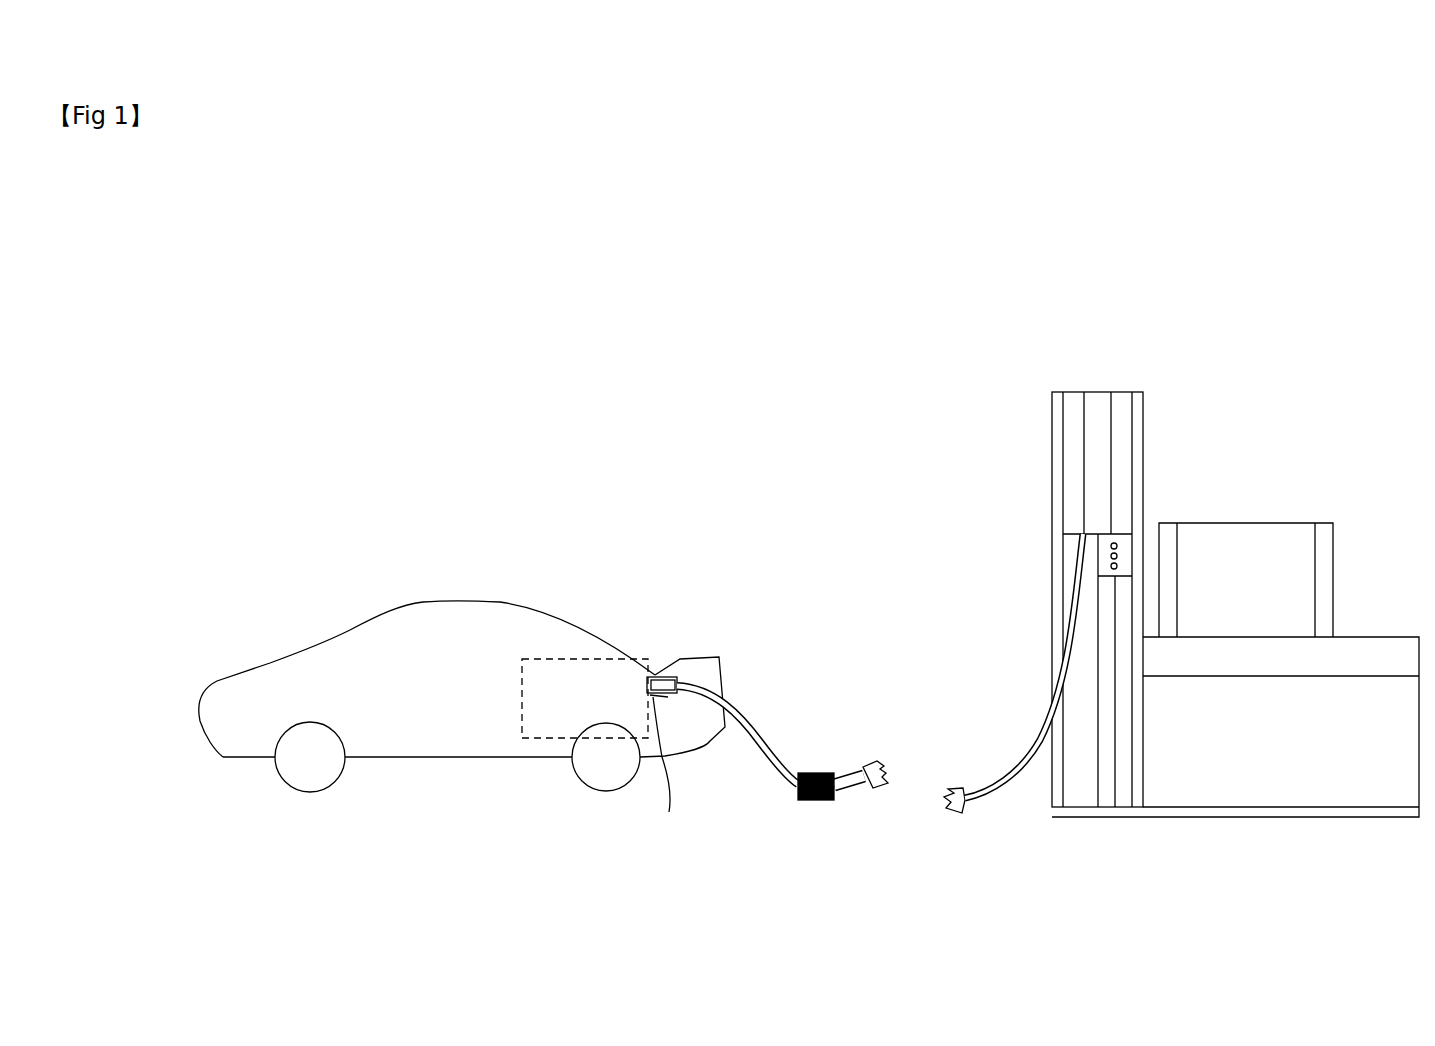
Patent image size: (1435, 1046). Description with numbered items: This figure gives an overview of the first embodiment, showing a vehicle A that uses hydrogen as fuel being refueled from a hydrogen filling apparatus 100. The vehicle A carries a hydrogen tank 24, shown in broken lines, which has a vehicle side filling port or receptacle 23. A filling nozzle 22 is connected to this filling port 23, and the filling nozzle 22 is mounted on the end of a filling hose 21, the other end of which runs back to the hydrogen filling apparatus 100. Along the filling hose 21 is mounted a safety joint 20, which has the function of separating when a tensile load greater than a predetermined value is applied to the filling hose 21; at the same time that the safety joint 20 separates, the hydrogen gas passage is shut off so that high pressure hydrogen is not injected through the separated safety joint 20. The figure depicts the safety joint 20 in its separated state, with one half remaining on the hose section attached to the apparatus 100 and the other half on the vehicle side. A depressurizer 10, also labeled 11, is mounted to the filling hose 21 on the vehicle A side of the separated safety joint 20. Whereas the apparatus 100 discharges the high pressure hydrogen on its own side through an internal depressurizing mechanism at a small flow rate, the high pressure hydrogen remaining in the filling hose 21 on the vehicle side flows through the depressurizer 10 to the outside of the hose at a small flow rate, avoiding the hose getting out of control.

The vehicle A is at (500, 602).
The depressurizer 10 is at (801, 833).
The control unit 11 is at (815, 800).
The safety joint 20 is at (880, 788).
The filling hose 21 is at (755, 740).
The filling nozzle 22 is at (670, 677).
The vehicle side filling port (receptacle) 23 is at (667, 766).
The hydrogen tank 24 is at (528, 738).
The hydrogen filling apparatus 100 is at (1095, 392).